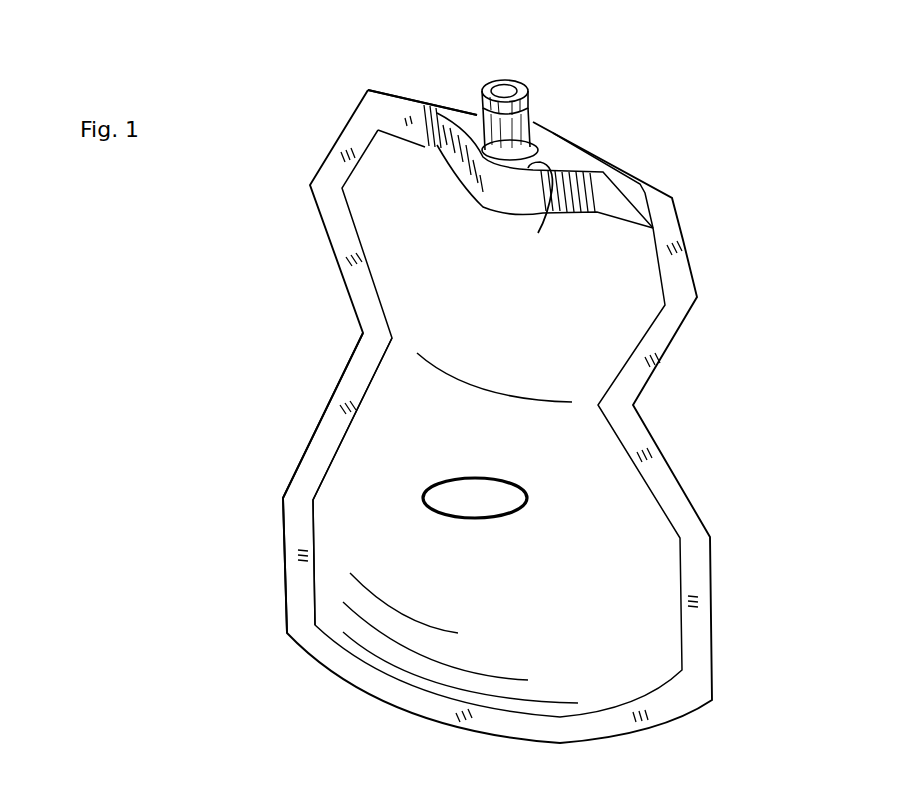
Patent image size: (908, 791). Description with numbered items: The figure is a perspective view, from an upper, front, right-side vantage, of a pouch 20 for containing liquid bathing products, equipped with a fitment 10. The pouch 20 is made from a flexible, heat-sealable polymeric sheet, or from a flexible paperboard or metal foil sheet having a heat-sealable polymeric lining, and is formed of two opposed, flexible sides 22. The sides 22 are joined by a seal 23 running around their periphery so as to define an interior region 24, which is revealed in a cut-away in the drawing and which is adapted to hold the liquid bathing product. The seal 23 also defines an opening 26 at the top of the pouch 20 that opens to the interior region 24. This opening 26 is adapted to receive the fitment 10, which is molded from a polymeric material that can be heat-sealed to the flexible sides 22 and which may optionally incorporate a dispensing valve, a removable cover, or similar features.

The fitment 10 is at (453, 102).
The pouch 20 is at (725, 185).
The flexible sides 22 is at (410, 290).
The seal 23 is at (317, 450).
The interior region 24 is at (500, 500).
The opening 26 is at (520, 179).